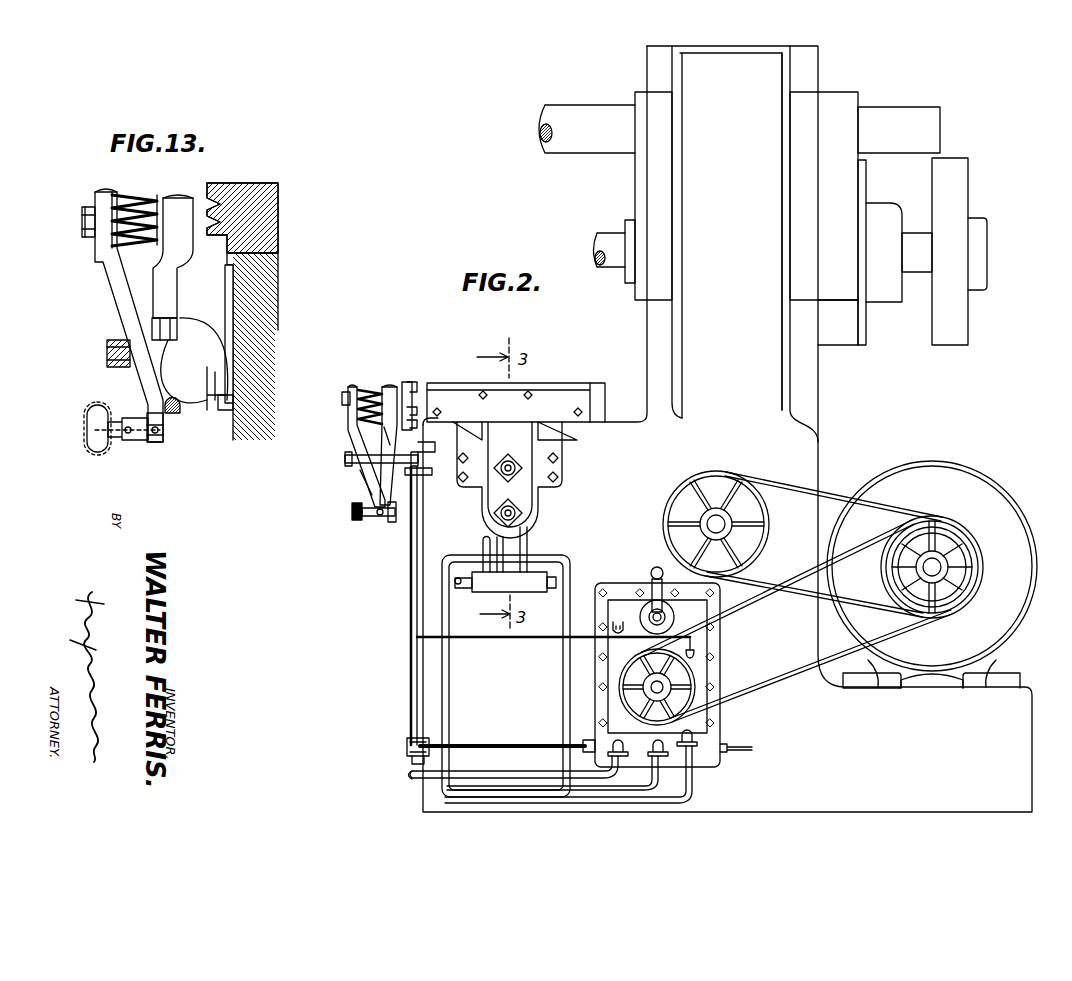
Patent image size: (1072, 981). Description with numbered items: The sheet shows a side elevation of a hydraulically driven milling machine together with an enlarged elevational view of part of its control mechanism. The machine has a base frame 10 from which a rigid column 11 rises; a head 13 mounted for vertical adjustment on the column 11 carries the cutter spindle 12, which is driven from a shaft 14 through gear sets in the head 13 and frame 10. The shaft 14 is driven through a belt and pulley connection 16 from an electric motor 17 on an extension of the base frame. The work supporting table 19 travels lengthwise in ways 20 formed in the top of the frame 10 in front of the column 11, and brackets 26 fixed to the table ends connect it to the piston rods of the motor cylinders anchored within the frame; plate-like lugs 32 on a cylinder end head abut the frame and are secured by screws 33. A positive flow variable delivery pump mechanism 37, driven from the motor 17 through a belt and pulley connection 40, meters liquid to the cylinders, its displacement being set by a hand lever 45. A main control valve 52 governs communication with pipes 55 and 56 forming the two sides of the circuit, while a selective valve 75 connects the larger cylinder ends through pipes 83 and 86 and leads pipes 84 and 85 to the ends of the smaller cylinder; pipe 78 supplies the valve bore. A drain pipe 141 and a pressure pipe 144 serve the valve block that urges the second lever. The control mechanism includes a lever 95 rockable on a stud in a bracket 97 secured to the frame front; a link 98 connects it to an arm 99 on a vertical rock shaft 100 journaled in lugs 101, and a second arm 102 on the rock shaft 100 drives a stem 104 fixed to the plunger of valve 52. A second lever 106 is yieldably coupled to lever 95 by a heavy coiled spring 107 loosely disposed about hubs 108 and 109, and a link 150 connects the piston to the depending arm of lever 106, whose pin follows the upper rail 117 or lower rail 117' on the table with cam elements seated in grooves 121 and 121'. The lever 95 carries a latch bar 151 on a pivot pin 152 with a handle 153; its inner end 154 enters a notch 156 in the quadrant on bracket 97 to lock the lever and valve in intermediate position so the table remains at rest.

In FIG. 13, the base frame 10 is at (248, 332).
In FIG. 2, the base frame 10 is at (806, 470).
In FIG. 2, the column 11 is at (770, 166).
In FIG. 2, the cutter spindle 12 is at (601, 246).
In FIG. 2, the head 13 is at (645, 181).
In FIG. 2, the shaft 14 is at (722, 528).
In FIG. 2, the belt and pulley connection 16 is at (960, 567).
In FIG. 2, the electric motor 17 is at (970, 488).
In FIG. 13, the work supporting table 19 is at (249, 187).
In FIG. 2, the work supporting table 19 is at (571, 382).
In FIG. 2, the ways 20 is at (538, 432).
In FIG. 2, the brackets 26 is at (541, 491).
In FIG. 2, the plate-like lugs 32 is at (566, 465).
In FIG. 2, the screws 33 is at (560, 453).
In FIG. 2, the pump mechanism 37 is at (702, 682).
In FIG. 2, the belt and pulley connection 40 is at (660, 722).
In FIG. 2, the hand lever 45 is at (655, 576).
In FIG. 2, the control valve 52 is at (726, 760).
In FIG. 2, the pipe 55 is at (449, 685).
In FIG. 2, the pipe 56 is at (567, 669).
In FIG. 2, the selective valve 75 is at (532, 592).
In FIG. 2, the pipe 78 is at (462, 591).
In FIG. 2, the pipe 83 is at (482, 564).
In FIG. 2, the pipe 84 is at (509, 582).
In FIG. 2, the pipe 85 is at (530, 557).
In FIG. 2, the pipe 86 is at (556, 567).
In FIG. 13, the lever 95 is at (118, 320).
In FIG. 2, the lever 95 is at (348, 433).
In FIG. 13, the bracket 97 is at (228, 405).
In FIG. 2, the bracket 97 is at (420, 446).
In FIG. 13, the link 98 is at (109, 371).
In FIG. 2, the link 98 is at (345, 459).
In FIG. 2, the arm 99 is at (357, 480).
In FIG. 2, the rock shaft 100 is at (413, 602).
In FIG. 2, the lugs 101 is at (412, 776).
In FIG. 2, the second arm 102 is at (406, 749).
In FIG. 2, the stem 104 is at (548, 745).
In FIG. 13, the second lever 106 is at (163, 287).
In FIG. 2, the second lever 106 is at (392, 388).
In FIG. 13, the coiled spring 107 is at (123, 206).
In FIG. 2, the coiled spring 107 is at (368, 390).
In FIG. 13, the hub 108 is at (103, 233).
In FIG. 13, the hub 109 is at (169, 200).
In FIG. 2, the upper rail 117 is at (425, 388).
In FIG. 2, the lower rail 117' is at (507, 411).
In FIG. 2, the groove 121 is at (440, 394).
In FIG. 2, the groove 121' is at (486, 394).
In FIG. 2, the drain pipe 141 is at (538, 778).
In FIG. 2, the pipe 144 is at (528, 640).
In FIG. 13, the link 150 is at (186, 316).
In FIG. 2, the link 150 is at (382, 448).
In FIG. 13, the latch bar 151 is at (117, 452).
In FIG. 2, the latch bar 151 is at (361, 506).
In FIG. 13, the pivot pin 152 is at (130, 442).
In FIG. 2, the pivot pin 152 is at (380, 519).
In FIG. 13, the handle 153 is at (93, 447).
In FIG. 2, the handle 153 is at (355, 519).
In FIG. 13, the inner end 154 is at (160, 444).
In FIG. 2, the inner end 154 is at (393, 524).
In FIG. 13, the notch 156 is at (180, 414).